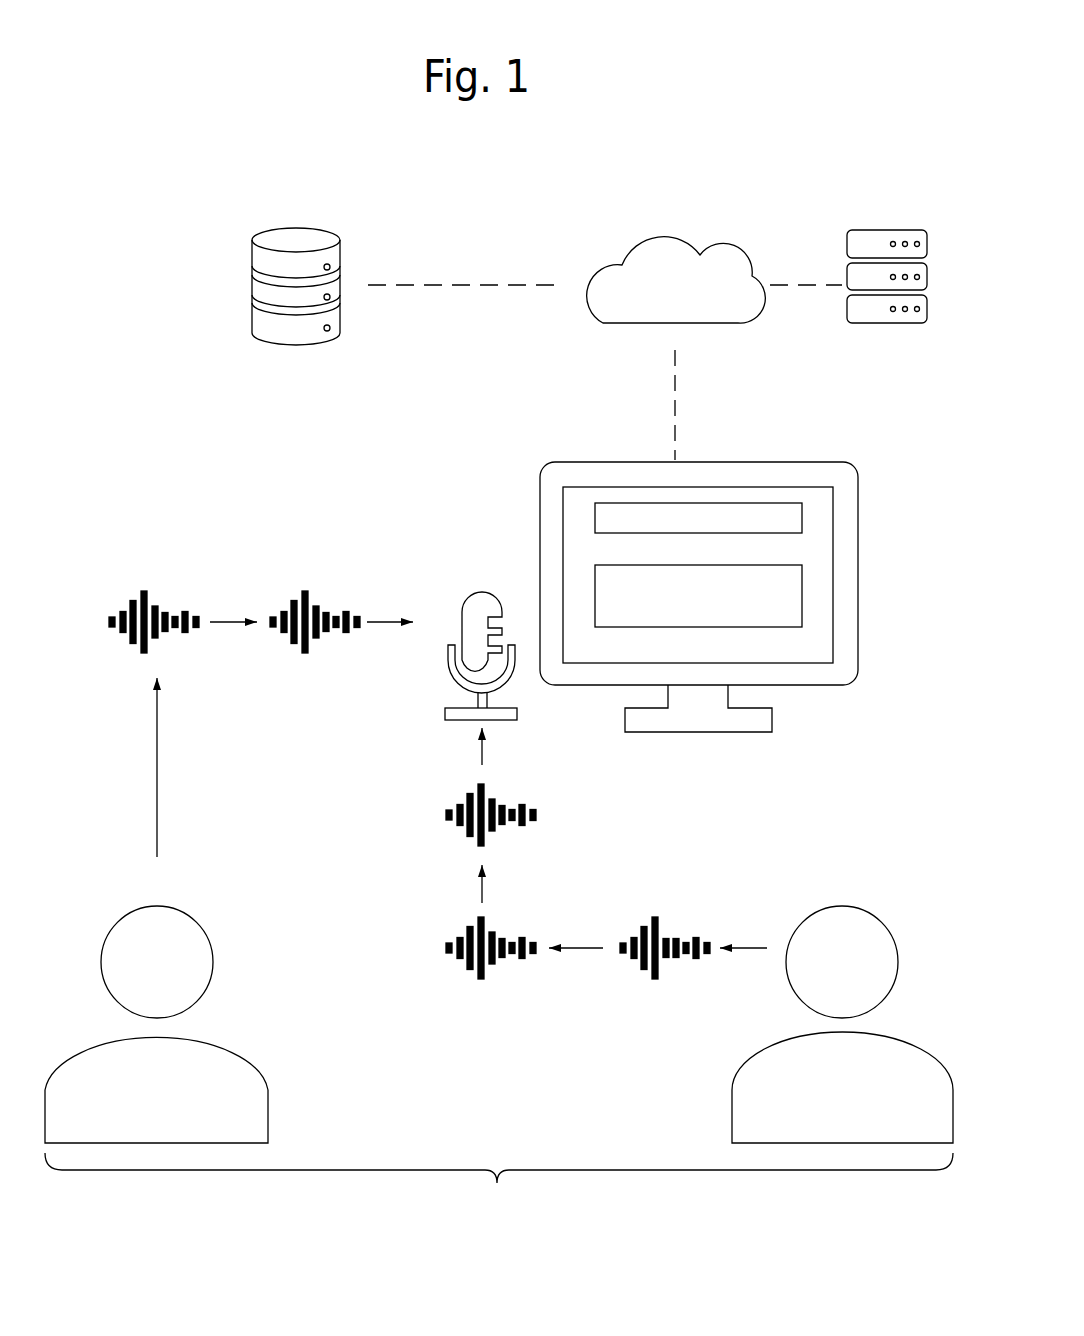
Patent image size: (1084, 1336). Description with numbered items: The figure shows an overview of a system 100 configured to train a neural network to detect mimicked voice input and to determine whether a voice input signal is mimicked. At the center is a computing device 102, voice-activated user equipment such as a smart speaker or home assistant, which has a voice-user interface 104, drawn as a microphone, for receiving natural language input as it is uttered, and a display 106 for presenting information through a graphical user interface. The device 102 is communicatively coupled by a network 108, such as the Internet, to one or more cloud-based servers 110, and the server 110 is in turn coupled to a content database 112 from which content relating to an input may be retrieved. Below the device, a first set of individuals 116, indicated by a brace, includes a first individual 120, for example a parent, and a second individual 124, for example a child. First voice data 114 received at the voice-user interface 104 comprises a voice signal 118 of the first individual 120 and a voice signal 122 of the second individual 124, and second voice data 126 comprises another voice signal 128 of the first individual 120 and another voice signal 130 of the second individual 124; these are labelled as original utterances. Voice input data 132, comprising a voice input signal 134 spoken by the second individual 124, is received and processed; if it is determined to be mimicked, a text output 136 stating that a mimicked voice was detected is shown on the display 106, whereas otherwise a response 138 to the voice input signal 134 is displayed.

The system 100 is at (180, 402).
The computing device 102 is at (691, 564).
The voice-user interface 104 is at (470, 593).
The display 106 is at (691, 575).
The network 108 is at (655, 222).
The server 110 is at (876, 230).
The content database 112 is at (292, 227).
The first voice data 114 is at (373, 685).
The first set of individuals 116 is at (499, 1185).
The voice signal of first individual 118 is at (283, 599).
The first individual 120 is at (265, 1070).
The voice signal of second individual 122 is at (437, 809).
The second individual 124 is at (732, 1080).
The second voice data 126 is at (289, 751).
The another voice signal of first individual 128 is at (112, 598).
The another voice signal of second individual 130 is at (437, 945).
The voice input data 132 is at (682, 912).
The voice input signal 134 is at (672, 923).
The text output 136 is at (802, 595).
The response 138 is at (802, 512).